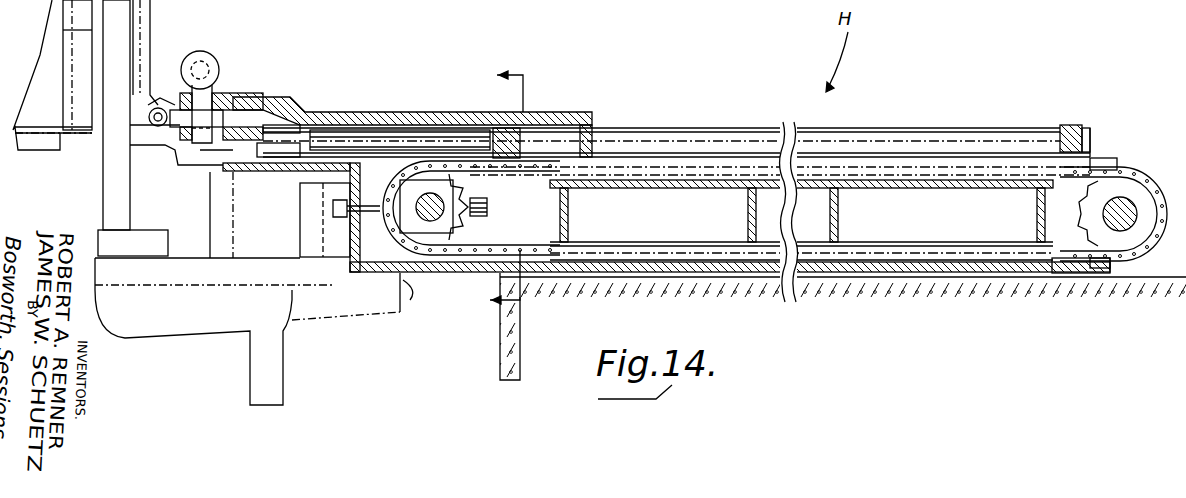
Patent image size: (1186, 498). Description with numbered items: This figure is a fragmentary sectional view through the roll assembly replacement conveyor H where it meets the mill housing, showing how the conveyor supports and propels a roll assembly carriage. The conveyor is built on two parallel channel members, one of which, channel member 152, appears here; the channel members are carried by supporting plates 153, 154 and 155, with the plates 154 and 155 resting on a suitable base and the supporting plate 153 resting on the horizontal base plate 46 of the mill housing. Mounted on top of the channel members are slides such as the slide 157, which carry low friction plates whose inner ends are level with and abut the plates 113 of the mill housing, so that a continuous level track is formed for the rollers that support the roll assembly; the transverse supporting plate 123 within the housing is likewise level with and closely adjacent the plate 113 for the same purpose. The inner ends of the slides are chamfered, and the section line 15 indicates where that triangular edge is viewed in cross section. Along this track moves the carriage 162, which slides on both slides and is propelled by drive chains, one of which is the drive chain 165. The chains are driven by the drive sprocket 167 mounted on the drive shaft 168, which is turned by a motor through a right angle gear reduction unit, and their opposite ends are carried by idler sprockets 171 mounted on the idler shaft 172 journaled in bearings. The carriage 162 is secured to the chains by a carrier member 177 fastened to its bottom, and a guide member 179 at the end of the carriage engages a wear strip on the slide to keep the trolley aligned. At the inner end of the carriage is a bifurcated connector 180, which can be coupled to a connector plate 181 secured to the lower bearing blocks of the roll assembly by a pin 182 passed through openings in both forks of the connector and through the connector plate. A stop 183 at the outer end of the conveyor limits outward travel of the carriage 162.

The section line 15- 15 is at (493, 188).
The horizontal base plate 46 is at (405, 303).
The plate 113 is at (127, 145).
The transverse supporting plate 123 is at (80, 140).
The channel member 152 is at (450, 277).
The supporting plate 153 is at (373, 272).
The supporting plate 154 is at (712, 268).
The supporting plate 155 is at (1043, 273).
The slide 157 is at (865, 127).
The carriage 162 is at (573, 111).
The drive chain 165 is at (1140, 172).
The drive sprocket 167 is at (1084, 222).
The drive shaft 168 is at (1128, 224).
The idler sprocket 171 is at (465, 221).
The idler shaft 172 is at (440, 206).
The carrier member 177 is at (492, 142).
The guide member 179 is at (323, 140).
The bifurcated connector 180 is at (277, 95).
The connector plate 181 is at (165, 108).
The pin 182 is at (213, 63).
The stop 183 is at (1075, 124).